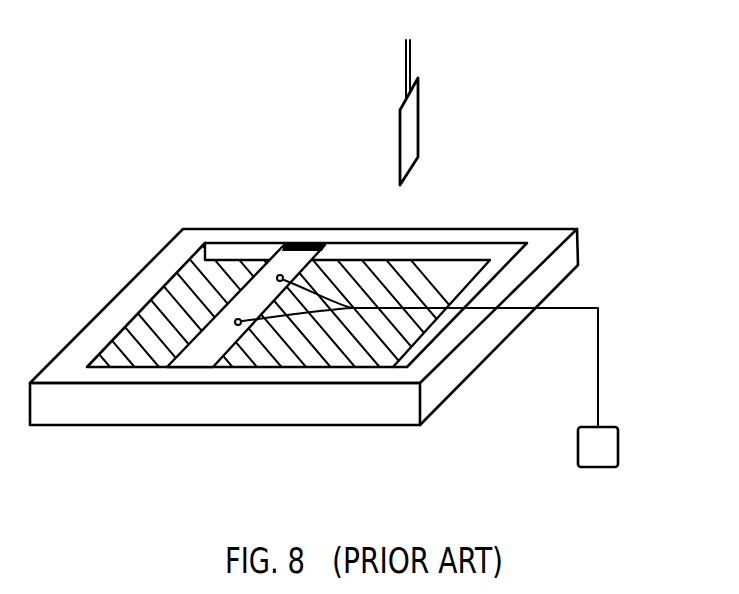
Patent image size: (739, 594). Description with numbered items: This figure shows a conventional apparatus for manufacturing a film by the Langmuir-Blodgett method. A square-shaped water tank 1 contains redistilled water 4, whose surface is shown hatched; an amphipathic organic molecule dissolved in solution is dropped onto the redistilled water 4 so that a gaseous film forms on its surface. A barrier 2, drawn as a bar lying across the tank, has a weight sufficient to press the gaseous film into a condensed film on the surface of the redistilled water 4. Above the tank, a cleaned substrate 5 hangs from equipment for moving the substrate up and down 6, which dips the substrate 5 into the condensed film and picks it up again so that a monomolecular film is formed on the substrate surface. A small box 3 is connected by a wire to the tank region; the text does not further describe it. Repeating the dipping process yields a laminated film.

The water tank 1 is at (478, 364).
The barrier 2 is at (310, 247).
The measuring device 3 is at (578, 440).
The redistilled water 4 is at (407, 265).
The substrate 5 is at (435, 77).
The equipment for moving the substrate up and down 6 is at (410, 52).